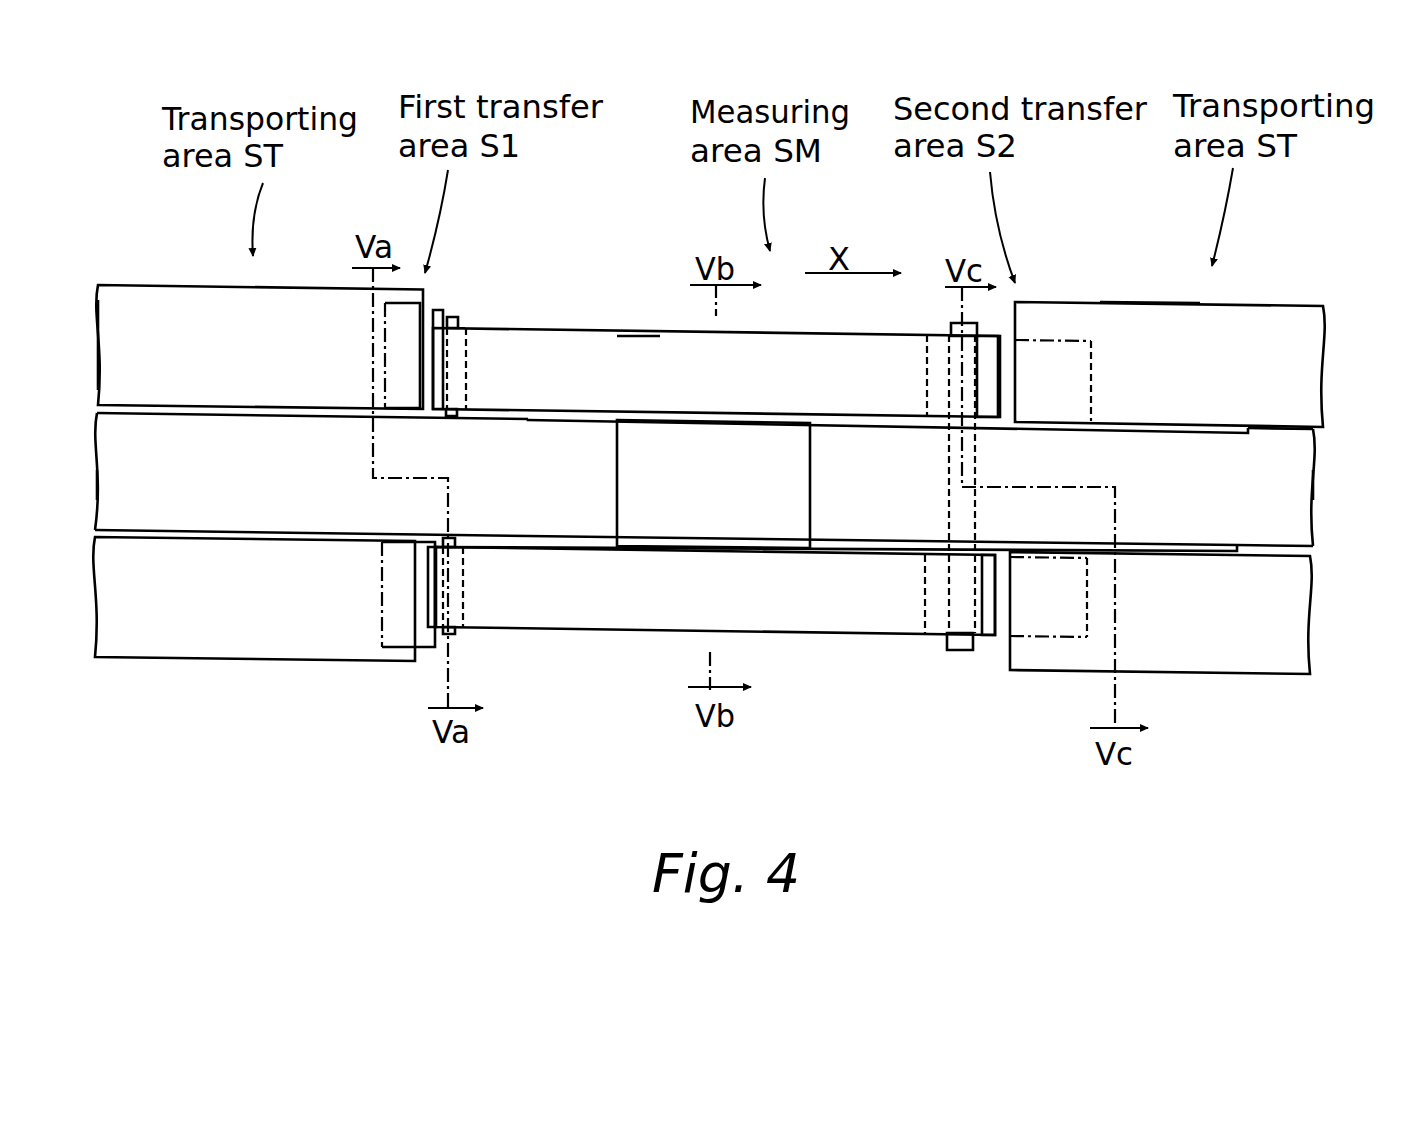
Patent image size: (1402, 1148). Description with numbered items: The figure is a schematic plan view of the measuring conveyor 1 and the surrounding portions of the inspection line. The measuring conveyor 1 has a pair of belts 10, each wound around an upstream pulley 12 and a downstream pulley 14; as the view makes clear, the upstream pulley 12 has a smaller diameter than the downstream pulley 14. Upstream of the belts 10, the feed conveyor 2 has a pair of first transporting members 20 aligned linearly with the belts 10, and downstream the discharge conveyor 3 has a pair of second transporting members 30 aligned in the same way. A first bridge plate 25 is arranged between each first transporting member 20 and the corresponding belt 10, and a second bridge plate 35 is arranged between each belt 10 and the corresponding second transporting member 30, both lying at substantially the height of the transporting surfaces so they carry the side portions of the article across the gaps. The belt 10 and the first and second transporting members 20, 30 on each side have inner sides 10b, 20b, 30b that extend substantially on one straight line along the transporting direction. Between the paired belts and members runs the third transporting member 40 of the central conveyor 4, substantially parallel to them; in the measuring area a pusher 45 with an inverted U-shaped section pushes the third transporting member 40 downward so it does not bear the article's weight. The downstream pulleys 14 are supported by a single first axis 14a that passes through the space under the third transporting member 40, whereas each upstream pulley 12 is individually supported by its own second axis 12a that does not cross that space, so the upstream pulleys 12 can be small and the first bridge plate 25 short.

The measuring conveyor 1 is at (620, 269).
The feed conveyor 2 is at (148, 279).
The discharge conveyor 3 is at (1165, 299).
The central conveyor 4 is at (129, 475).
The belt 10 is at (585, 348).
The inner side of belt 10b is at (528, 412).
The upstream pulley 12 is at (468, 388).
The second axis 12a is at (455, 318).
The downstream pulley 14 is at (925, 352).
The first axis 14a is at (950, 325).
The first transporting member 20 is at (205, 300).
The inner side of first transporting member 20b is at (228, 415).
The first bridge plate 25 is at (430, 300).
The second transporting member 30 is at (1278, 325).
The inner side of second transporting member 30b is at (1248, 430).
The second bridge plate 35 is at (1095, 368).
The third transporting member 40 is at (113, 505).
The pusher 45 is at (815, 438).